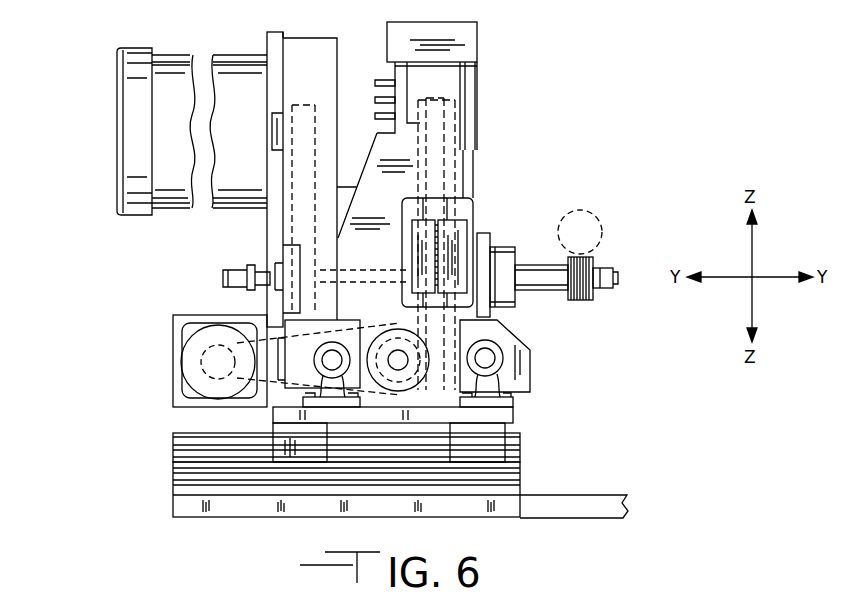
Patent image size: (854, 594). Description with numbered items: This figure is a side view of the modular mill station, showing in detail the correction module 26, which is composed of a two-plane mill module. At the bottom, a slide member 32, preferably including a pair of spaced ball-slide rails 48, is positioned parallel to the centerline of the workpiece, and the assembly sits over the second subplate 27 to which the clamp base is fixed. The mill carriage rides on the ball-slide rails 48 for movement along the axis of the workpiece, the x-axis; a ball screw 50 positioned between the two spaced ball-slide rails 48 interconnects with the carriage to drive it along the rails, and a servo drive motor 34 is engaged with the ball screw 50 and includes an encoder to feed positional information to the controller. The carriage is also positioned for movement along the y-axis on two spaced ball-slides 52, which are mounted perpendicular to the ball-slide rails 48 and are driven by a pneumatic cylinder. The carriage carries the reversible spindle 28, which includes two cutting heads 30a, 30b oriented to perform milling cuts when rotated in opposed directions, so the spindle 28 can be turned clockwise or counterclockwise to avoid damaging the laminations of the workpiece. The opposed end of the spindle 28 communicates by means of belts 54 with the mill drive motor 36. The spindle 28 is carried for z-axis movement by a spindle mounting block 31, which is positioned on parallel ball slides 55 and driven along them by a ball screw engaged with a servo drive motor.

The correction module 26 is at (540, 358).
The second subplate 27 is at (240, 500).
The reversible spindle 28 is at (553, 300).
The cutting head 30a is at (573, 253).
The cutting head 30b is at (597, 255).
The spindle mounting block 31 is at (493, 200).
The slide member 32 is at (497, 368).
The servo drive motor 34 is at (215, 360).
The mill drive motor 36 is at (133, 162).
The ball-slide rails 48 is at (327, 362).
The ball screw 50 is at (397, 340).
The ball-slides 52 is at (520, 447).
The belts 54 is at (300, 203).
The ball slides 55 is at (487, 200).